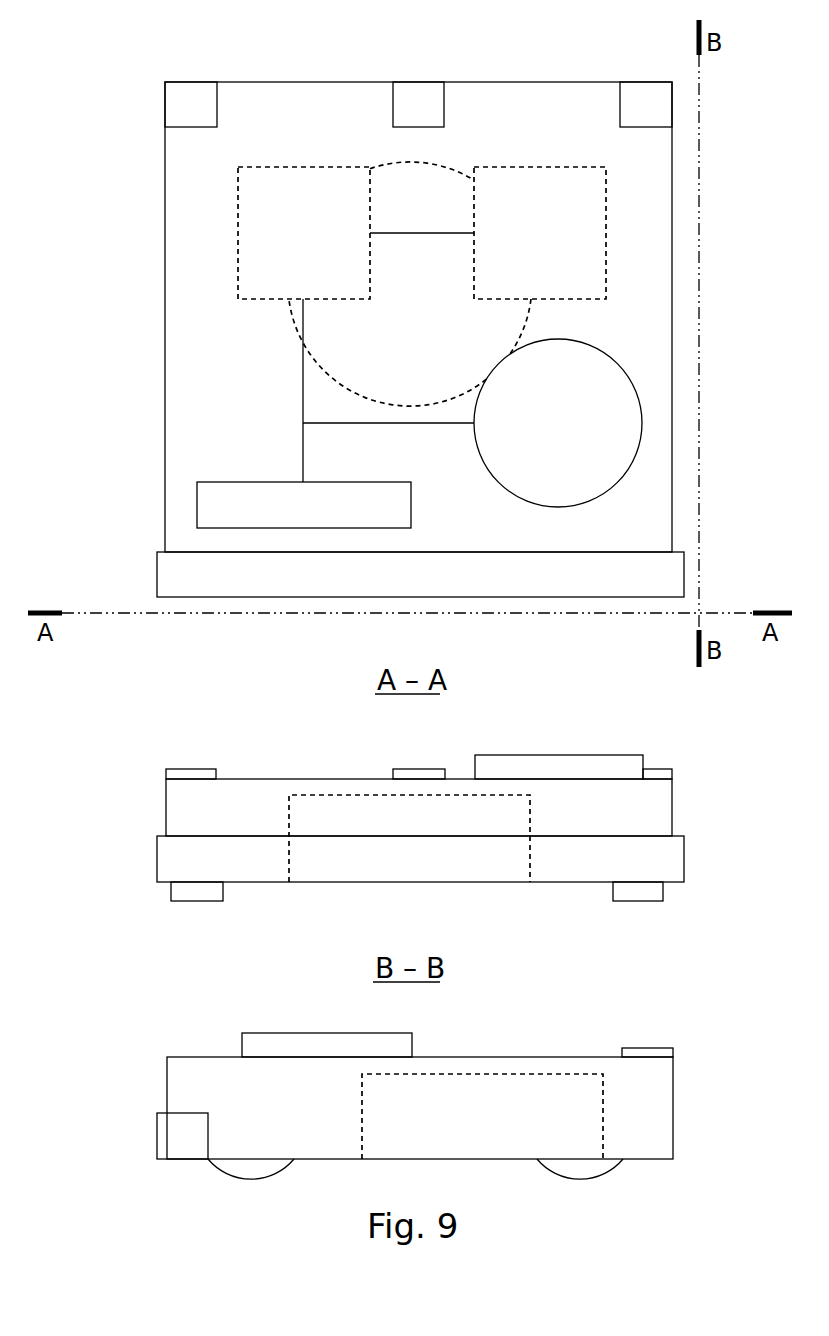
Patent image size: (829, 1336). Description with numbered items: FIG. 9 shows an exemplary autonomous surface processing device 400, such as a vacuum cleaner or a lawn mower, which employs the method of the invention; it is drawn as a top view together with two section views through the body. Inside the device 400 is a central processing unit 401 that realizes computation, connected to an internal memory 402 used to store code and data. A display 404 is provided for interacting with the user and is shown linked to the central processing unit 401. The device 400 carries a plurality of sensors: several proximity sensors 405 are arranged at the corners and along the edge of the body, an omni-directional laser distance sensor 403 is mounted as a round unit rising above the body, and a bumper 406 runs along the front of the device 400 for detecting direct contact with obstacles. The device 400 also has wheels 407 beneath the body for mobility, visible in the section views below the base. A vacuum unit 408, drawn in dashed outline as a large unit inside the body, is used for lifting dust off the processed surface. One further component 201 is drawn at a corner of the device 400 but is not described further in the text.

The corner module 201 is at (182, 95).
The device 400 is at (167, 349).
The central processing unit 401 is at (262, 208).
The internal memory 402 is at (562, 213).
The omni-directional laser distance sensor 403 is at (562, 375).
The display 404 is at (183, 494).
The proximity sensors 405 is at (418, 100).
The bumper 406 is at (183, 560).
The wheels 407 is at (201, 891).
The vacuum unit 408 is at (408, 192).